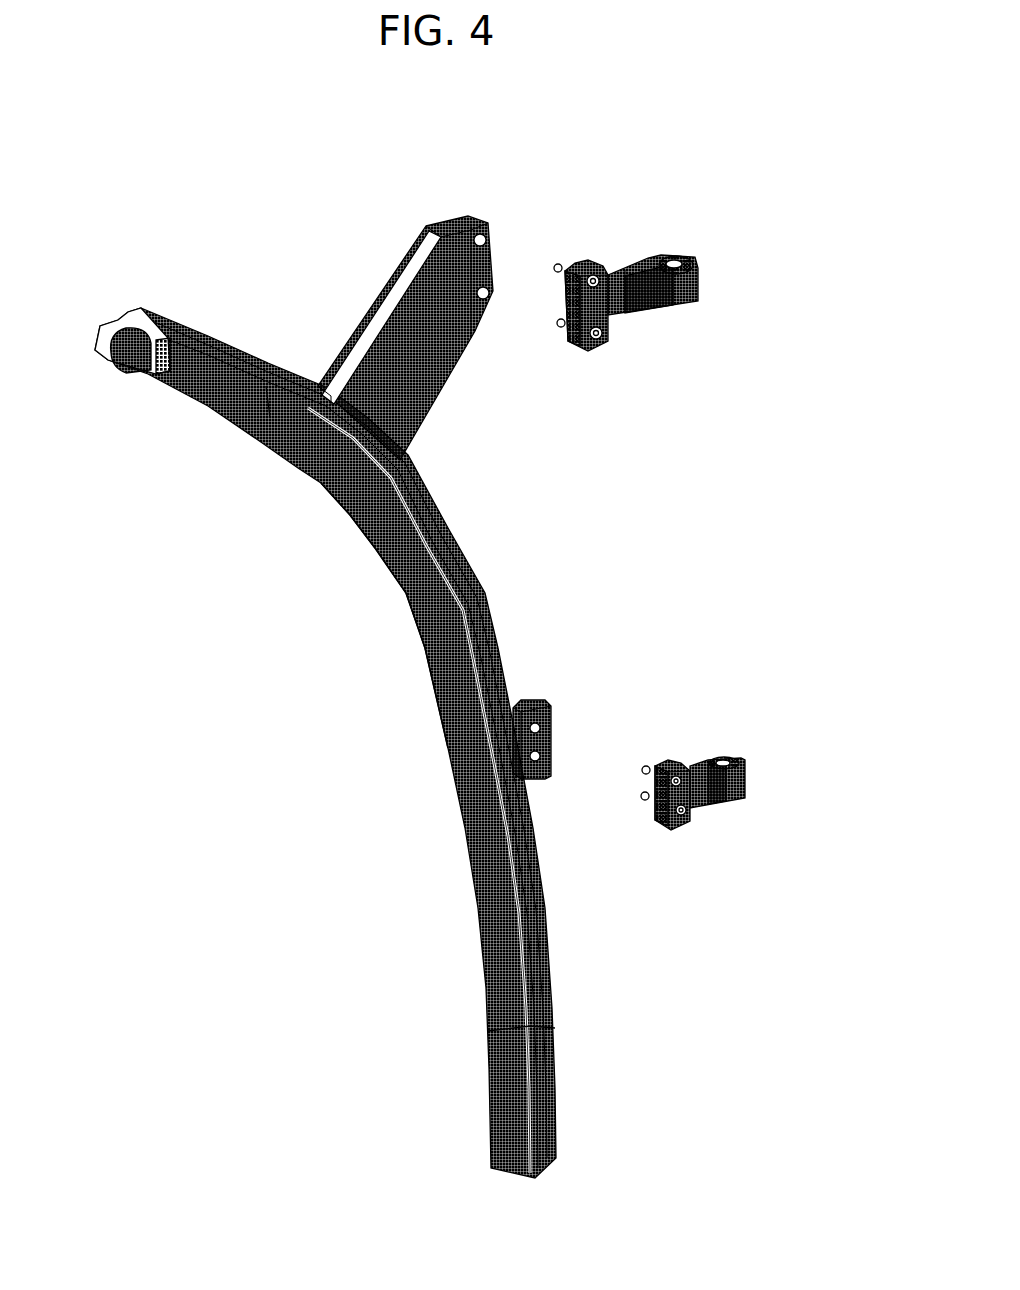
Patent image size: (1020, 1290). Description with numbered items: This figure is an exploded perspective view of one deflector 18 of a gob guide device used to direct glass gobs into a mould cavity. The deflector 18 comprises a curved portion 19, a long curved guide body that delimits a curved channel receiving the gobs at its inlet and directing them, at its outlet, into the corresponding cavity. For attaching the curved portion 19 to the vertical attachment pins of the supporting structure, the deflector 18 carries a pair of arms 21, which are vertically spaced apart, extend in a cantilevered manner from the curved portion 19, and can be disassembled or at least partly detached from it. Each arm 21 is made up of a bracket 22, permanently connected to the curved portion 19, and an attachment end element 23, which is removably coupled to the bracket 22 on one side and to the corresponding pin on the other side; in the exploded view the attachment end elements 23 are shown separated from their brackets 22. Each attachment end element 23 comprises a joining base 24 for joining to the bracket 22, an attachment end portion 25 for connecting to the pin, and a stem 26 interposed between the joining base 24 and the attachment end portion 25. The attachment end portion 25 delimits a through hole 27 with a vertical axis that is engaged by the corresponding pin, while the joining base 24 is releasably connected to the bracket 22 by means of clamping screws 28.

The deflector 18 is at (396, 587).
The curved portion 19 is at (430, 654).
The arms 21 is at (576, 520).
The bracket 22 is at (345, 328).
The attachment end element 23 is at (668, 532).
The joining base 24 is at (553, 306).
The attachment end portion 25 is at (692, 282).
The stem 26 is at (633, 300).
The through hole 27 is at (662, 255).
The clamping screws 28 is at (553, 258).